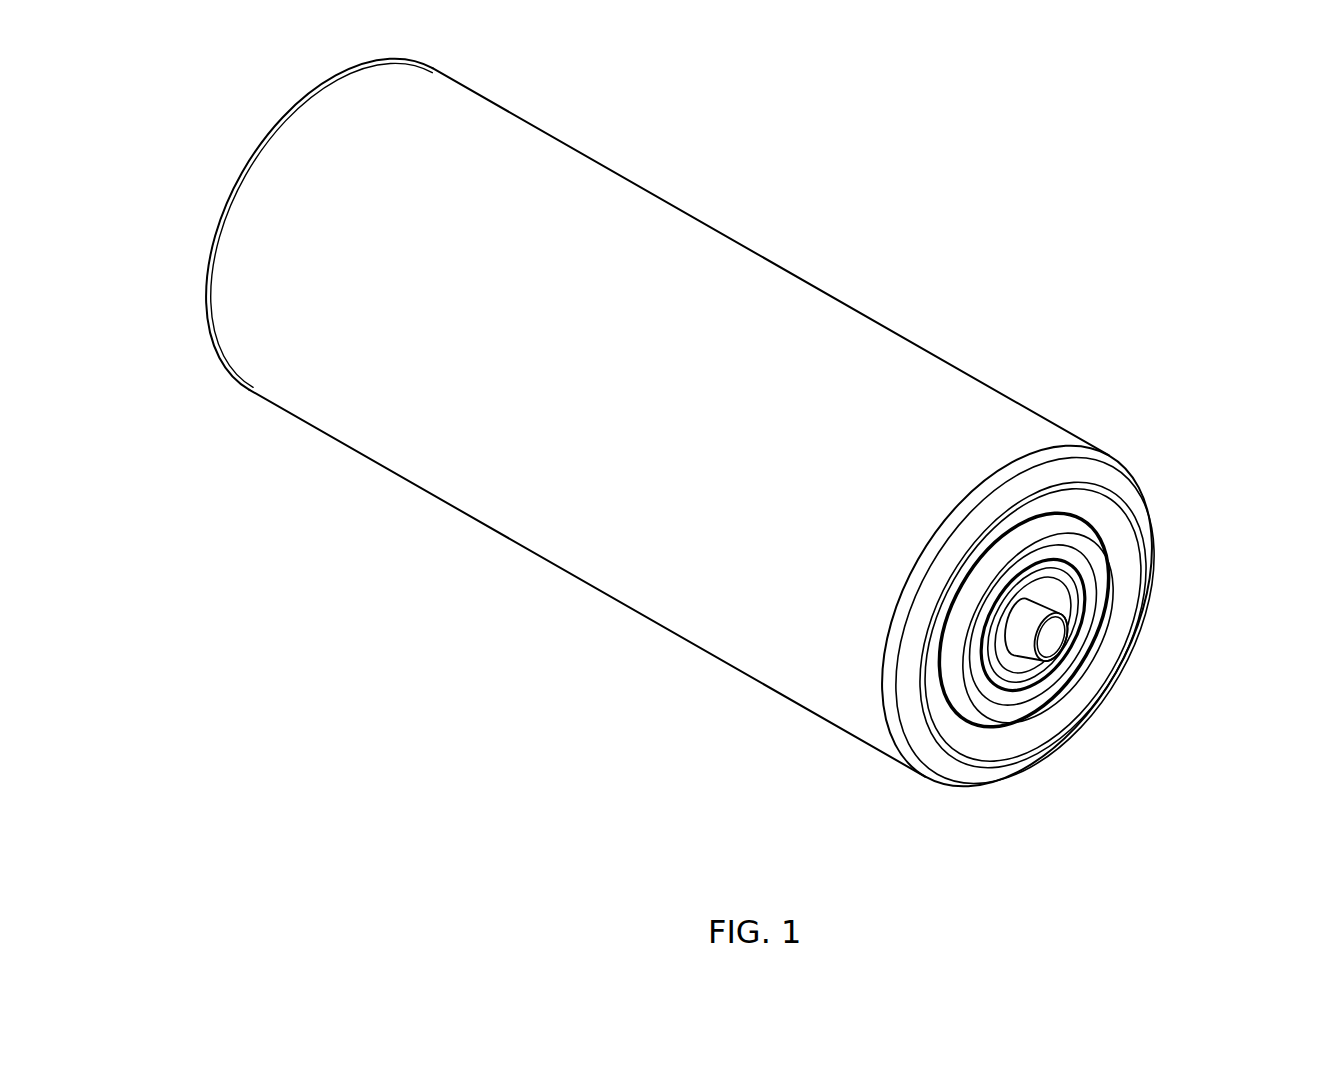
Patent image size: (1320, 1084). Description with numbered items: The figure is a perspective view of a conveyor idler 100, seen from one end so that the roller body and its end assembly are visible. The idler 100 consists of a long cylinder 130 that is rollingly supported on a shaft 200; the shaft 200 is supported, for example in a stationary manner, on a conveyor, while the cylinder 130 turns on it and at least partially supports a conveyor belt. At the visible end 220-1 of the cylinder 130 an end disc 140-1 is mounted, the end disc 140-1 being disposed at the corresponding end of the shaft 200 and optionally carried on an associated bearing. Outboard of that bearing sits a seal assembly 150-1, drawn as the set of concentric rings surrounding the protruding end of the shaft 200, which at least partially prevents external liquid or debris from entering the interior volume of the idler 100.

The conveyor idler 100 is at (700, 446).
The cylinder 130 is at (637, 182).
The end disc 140-1 is at (1107, 484).
The seal assembly 150-1 is at (1080, 580).
The shaft 200 is at (1110, 522).
The end of the cylinder 220-1 is at (1057, 647).